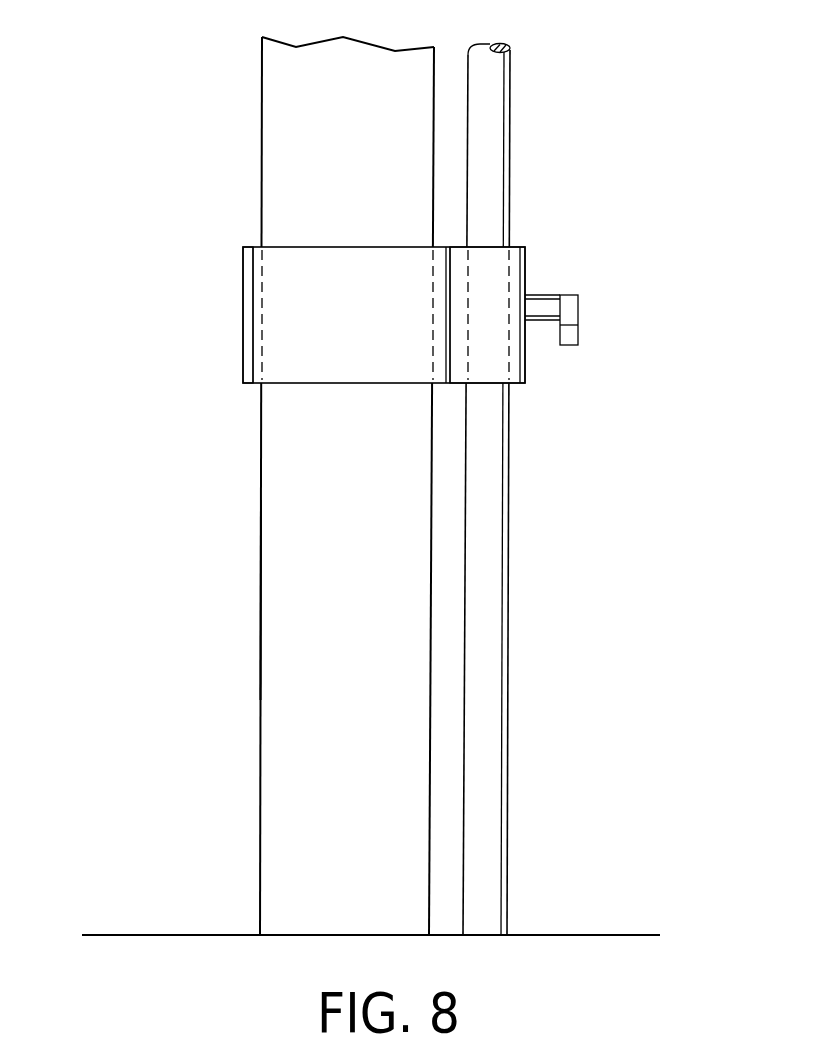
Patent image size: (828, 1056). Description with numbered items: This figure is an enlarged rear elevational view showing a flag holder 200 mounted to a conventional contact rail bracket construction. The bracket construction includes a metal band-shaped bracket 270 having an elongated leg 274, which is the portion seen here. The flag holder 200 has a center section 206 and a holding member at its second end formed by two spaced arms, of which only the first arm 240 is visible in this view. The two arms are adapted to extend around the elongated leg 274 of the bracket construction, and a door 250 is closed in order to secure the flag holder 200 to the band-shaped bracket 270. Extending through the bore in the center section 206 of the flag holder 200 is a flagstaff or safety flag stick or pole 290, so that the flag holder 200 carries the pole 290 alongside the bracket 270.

The flag holder 200 is at (389, 288).
The center section 206 is at (500, 351).
The first arm 240 is at (376, 320).
The door 250 is at (243, 293).
The band-shaped bracket 270 is at (255, 93).
The elongated leg 274 is at (273, 552).
The flagstaff 290 is at (494, 90).